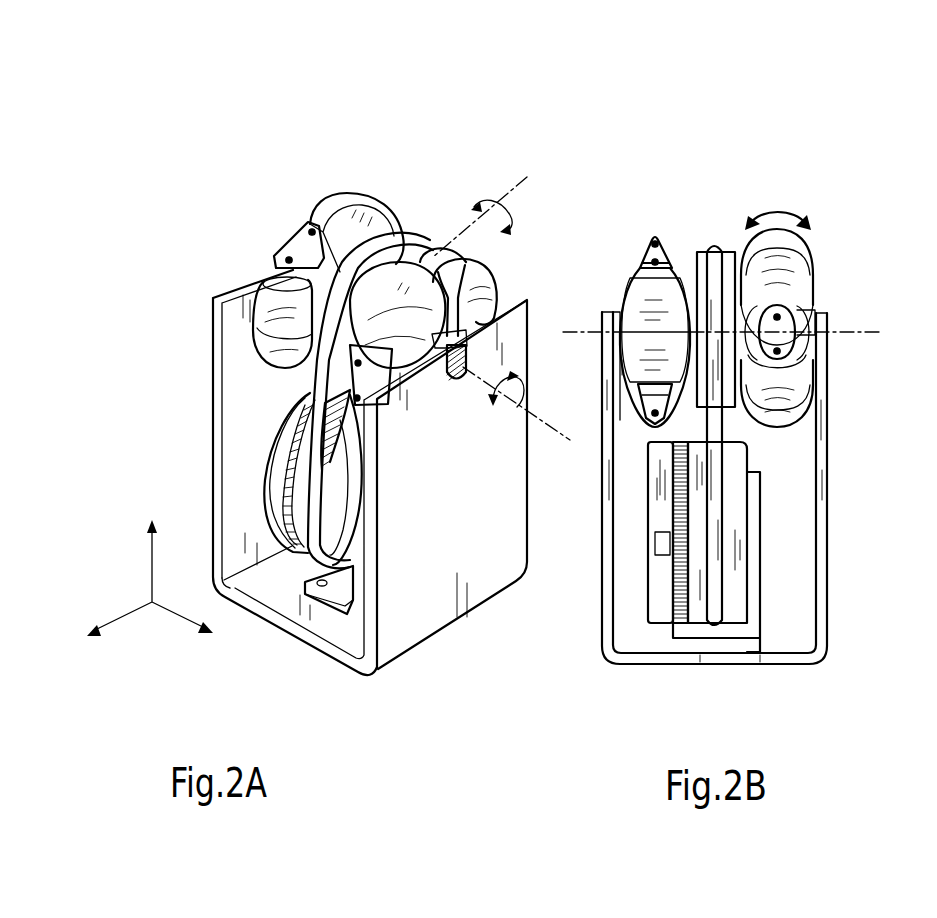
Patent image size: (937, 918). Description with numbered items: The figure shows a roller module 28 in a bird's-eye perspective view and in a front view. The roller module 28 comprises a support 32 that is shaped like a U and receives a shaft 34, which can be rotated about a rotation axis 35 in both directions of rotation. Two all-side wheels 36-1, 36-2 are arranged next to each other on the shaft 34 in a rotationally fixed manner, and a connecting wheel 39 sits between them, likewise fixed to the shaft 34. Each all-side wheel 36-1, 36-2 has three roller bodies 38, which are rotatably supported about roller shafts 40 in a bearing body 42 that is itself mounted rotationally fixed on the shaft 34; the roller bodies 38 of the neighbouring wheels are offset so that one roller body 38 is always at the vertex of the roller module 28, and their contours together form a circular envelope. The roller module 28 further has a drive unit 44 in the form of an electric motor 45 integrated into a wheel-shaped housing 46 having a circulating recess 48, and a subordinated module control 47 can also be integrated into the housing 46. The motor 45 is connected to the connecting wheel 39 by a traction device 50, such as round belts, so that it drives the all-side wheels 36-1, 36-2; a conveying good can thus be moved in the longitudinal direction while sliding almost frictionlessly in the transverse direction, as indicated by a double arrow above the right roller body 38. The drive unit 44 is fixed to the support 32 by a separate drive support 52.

In FIG. 2A, the roller module 28 is at (233, 166).
In FIG. 2B, the roller module 28 is at (782, 182).
In FIG. 2A, the support 32 is at (392, 662).
In FIG. 2B, the support 32 is at (772, 665).
In FIG. 2A, the shaft 34 is at (457, 378).
In FIG. 2A, the rotation axis 35 is at (563, 435).
In FIG. 2B, the rotation axis 35 is at (868, 332).
In FIG. 2A, the all-side wheel 36-1 is at (504, 265).
In FIG. 2B, the all-side wheel 36-1 is at (838, 205).
In FIG. 2A, the all-side wheel 36-2 is at (346, 183).
In FIG. 2B, the all-side wheel 36-2 is at (629, 222).
In FIG. 2B, the roller body 38 is at (813, 252).
In FIG. 2B, the connecting wheel 39 is at (731, 238).
In FIG. 2A, the roller shaft 40 is at (290, 262).
In FIG. 2B, the roller shaft 40 is at (650, 240).
In FIG. 2A, the bearing body 42 is at (442, 255).
In FIG. 2B, the bearing body 42 is at (633, 272).
In FIG. 2A, the drive unit 44 is at (234, 455).
In FIG. 2B, the electric motor 45 is at (634, 591).
In FIG. 2B, the housing 46 is at (747, 455).
In FIG. 2B, the module control 47 is at (655, 545).
In FIG. 2B, the circulating recess 48 is at (678, 632).
In FIG. 2A, the traction device 50 is at (317, 395).
In FIG. 2B, the traction device 50 is at (723, 527).
In FIG. 2A, the drive support 52 is at (331, 630).
In FIG. 2B, the drive support 52 is at (760, 603).